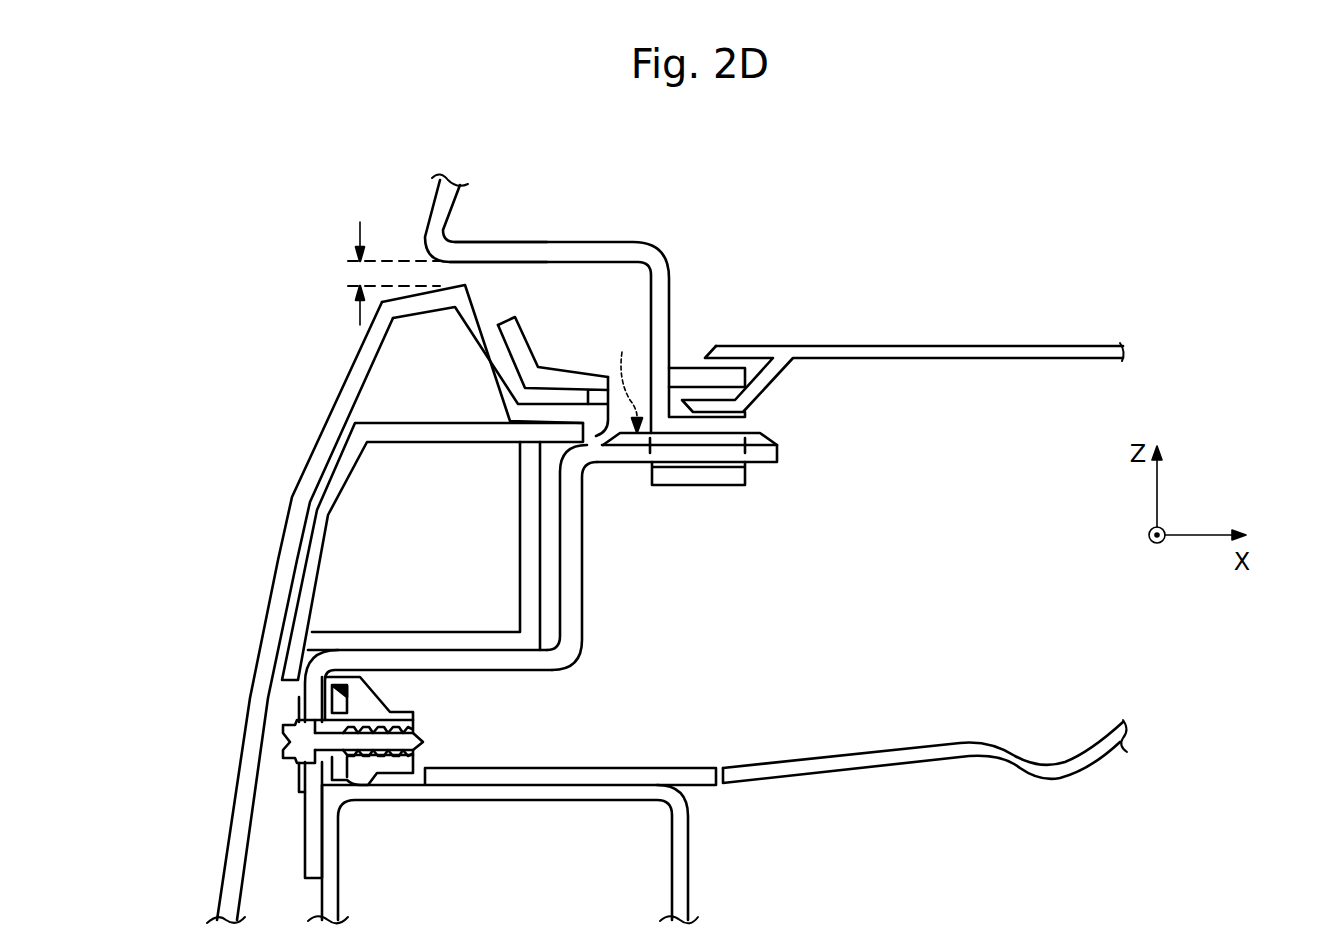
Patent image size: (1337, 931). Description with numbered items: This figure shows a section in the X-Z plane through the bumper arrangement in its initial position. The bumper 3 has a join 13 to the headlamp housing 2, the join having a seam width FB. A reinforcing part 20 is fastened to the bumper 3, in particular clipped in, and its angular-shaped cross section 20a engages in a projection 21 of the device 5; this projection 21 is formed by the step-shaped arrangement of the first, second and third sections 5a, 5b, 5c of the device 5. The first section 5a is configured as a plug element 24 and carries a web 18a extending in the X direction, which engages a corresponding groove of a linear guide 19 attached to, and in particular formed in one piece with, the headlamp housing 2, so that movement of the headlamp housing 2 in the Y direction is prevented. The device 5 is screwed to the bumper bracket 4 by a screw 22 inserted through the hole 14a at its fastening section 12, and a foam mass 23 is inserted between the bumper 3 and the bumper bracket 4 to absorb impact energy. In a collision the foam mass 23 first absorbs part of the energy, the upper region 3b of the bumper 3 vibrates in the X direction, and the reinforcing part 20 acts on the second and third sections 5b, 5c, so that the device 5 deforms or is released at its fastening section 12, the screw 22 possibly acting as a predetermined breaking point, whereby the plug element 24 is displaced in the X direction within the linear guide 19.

The headlamp housing 2 is at (642, 253).
The bumper 3 is at (276, 612).
The upper region of the bumper 3b is at (368, 351).
The bumper bracket 4 is at (677, 870).
The device 5 is at (578, 658).
The first section of the device 5a is at (765, 455).
The second section of the device 5b is at (583, 536).
The third section of the device 5c is at (465, 670).
The fastening section 12 is at (312, 688).
The join 13 is at (463, 275).
The hole 14a is at (308, 723).
The web 18a is at (760, 440).
The linear guide 19 is at (740, 477).
The reinforcing part 20 is at (465, 564).
The angular-shaped cross section 20a is at (530, 607).
The projection 21 is at (487, 650).
The screw 22 is at (297, 760).
The foam mass 23 is at (265, 858).
The plug element 24 is at (618, 374).
The seam width FB is at (372, 273).